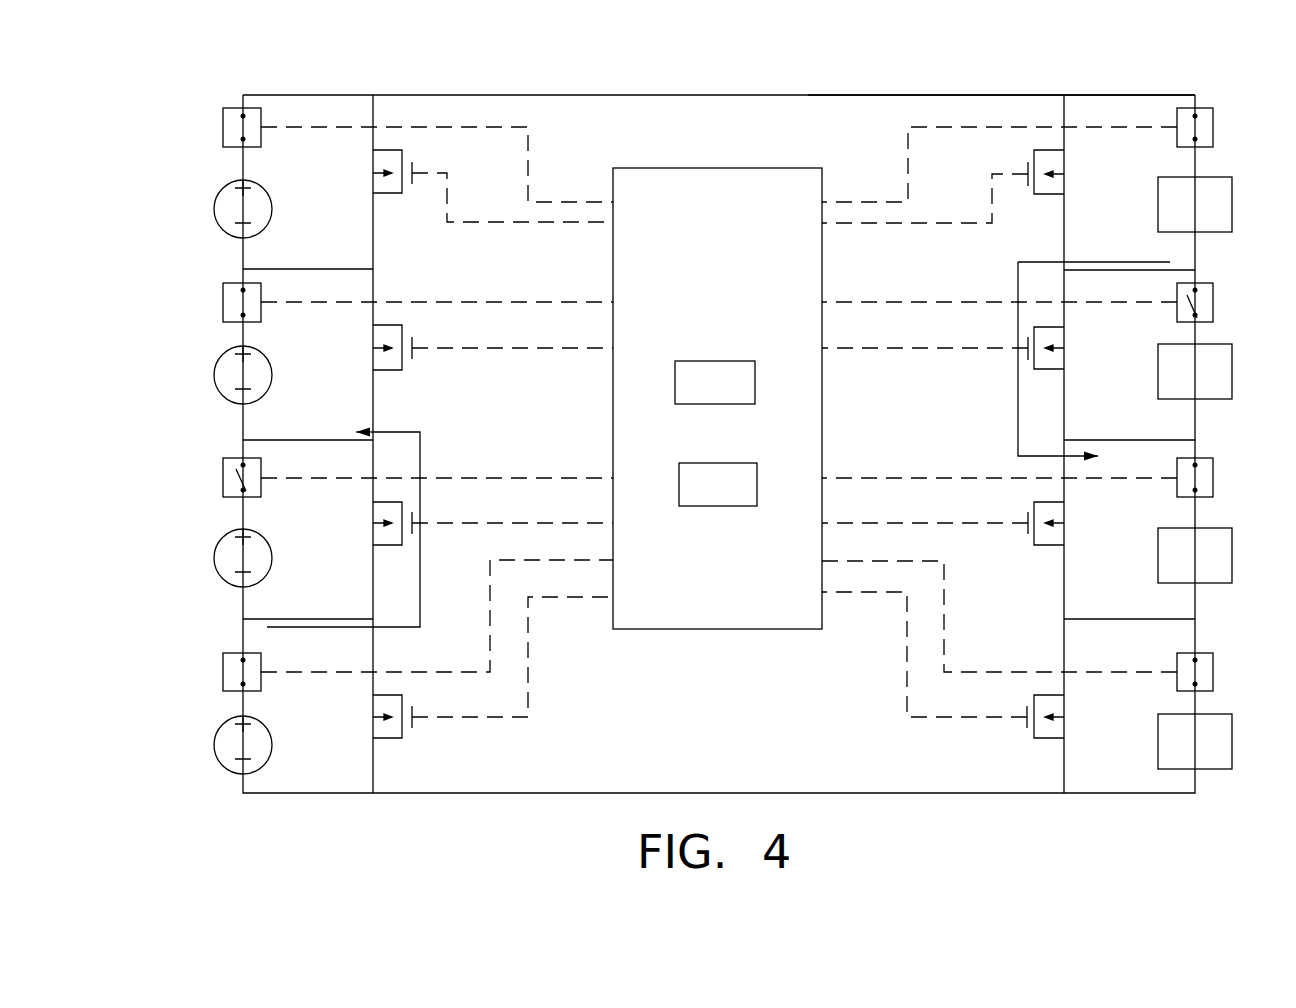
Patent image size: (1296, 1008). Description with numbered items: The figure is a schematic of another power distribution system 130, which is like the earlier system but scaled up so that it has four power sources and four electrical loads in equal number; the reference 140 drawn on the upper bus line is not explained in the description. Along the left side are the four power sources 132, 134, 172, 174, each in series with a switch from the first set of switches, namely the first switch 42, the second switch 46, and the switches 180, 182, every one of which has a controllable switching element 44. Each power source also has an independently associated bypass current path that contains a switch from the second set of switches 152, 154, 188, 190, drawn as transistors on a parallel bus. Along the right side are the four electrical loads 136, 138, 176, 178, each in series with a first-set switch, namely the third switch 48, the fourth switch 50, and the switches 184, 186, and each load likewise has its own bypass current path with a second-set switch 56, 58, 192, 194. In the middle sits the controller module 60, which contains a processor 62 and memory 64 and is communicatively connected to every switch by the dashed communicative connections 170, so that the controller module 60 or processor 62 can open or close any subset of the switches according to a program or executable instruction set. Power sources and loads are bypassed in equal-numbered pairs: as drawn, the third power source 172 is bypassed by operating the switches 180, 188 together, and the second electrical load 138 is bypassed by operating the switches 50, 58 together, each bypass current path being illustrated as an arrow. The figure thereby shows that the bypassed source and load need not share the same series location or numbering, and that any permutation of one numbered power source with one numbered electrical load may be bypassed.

The power distribution system 130 is at (243, 74).
The second circuit bus 140 is at (808, 95).
The first switch 42 is at (223, 128).
The controllable switching element 44 is at (249, 118).
The second switch 46 is at (223, 305).
The third switch 48 is at (1213, 122).
The fourth switch 50 is at (1213, 296).
The switch of the second set of switches 56 is at (1036, 149).
The switch of the second set of switches 58 is at (1042, 379).
The controller module 60 is at (732, 321).
The processor 62 is at (715, 382).
The memory 64 is at (718, 484).
The power source 132 is at (214, 178).
The power source 134 is at (214, 344).
The electrical load 136 is at (1167, 172).
The second electrical load 138 is at (1167, 340).
The switch of the second set of switches 152 is at (403, 149).
The switch of the second set of switches 154 is at (403, 324).
The communicative connections 170 is at (530, 200).
The third power source 172 is at (214, 527).
The power source 174 is at (214, 714).
The electrical load 176 is at (1167, 523).
The electrical load 178 is at (1167, 710).
The switch of the first set of switches 180 is at (223, 487).
The switch of the first set of switches 182 is at (223, 682).
The switch of the first set of switches 184 is at (1213, 497).
The switch of the first set of switches 186 is at (1213, 668).
The switch of the second set of switches 188 is at (394, 554).
The switch of the second set of switches 190 is at (396, 752).
The switch of the second set of switches 192 is at (1042, 554).
The switch of the second set of switches 194 is at (1042, 749).